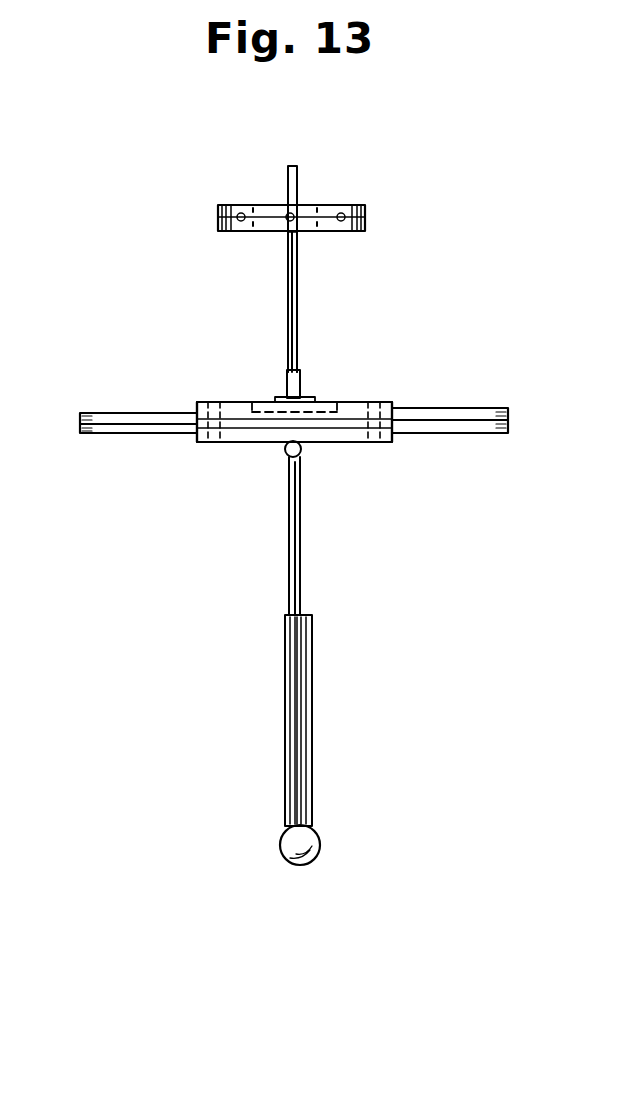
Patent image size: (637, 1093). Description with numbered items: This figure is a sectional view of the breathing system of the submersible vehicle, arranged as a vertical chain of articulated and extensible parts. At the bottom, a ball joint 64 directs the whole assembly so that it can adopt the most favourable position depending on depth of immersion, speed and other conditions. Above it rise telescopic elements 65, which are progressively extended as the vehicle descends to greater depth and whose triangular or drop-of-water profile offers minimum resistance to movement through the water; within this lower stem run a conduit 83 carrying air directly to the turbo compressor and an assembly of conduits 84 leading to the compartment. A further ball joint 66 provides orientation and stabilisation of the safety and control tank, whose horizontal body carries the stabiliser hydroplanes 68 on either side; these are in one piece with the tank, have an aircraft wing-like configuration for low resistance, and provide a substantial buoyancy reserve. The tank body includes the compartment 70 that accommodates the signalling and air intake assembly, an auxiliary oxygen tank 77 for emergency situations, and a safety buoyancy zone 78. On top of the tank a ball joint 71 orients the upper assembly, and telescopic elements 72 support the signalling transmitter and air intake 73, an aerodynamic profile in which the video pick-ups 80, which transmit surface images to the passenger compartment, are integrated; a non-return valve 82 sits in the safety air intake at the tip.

The ball joint 64 is at (310, 862).
The telescopic elements 65 is at (290, 630).
The ball joint 66 is at (301, 452).
The stabiliser hydroplanes 68 is at (93, 438).
The compartment 70 is at (330, 408).
The ball joint 71 is at (302, 398).
The telescopic elements 72 is at (288, 374).
The signalling transmitter and air intake 73 is at (296, 201).
The auxiliary oxygen tank 77 is at (378, 410).
The safety buoyancy zone 78 is at (204, 442).
The video pick-ups 80 is at (219, 210).
The non-return valve 82 is at (296, 192).
The conduit 83 is at (300, 720).
The assembly of conduits 84 is at (306, 692).